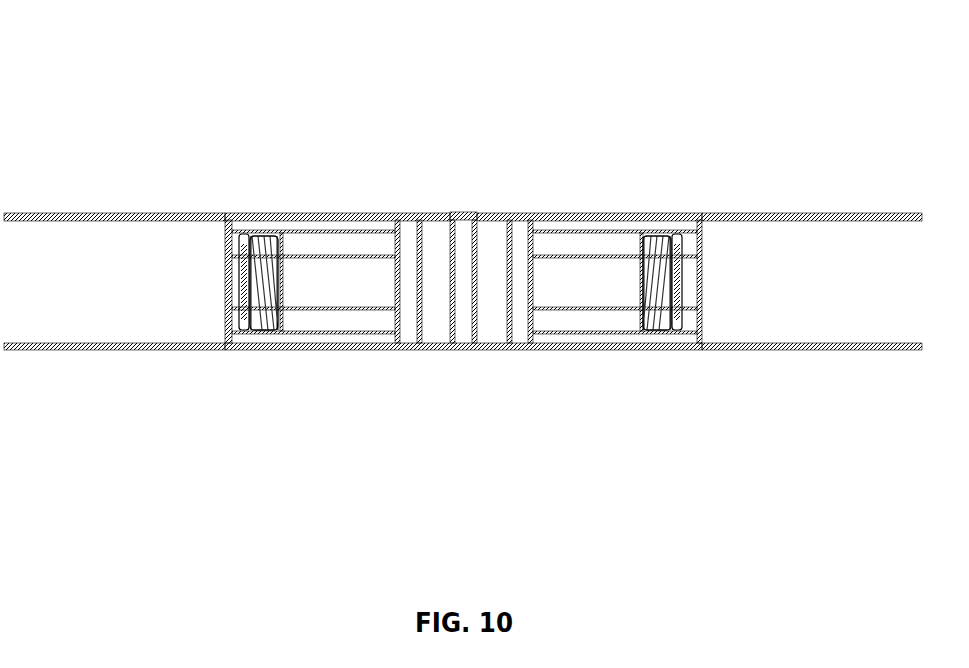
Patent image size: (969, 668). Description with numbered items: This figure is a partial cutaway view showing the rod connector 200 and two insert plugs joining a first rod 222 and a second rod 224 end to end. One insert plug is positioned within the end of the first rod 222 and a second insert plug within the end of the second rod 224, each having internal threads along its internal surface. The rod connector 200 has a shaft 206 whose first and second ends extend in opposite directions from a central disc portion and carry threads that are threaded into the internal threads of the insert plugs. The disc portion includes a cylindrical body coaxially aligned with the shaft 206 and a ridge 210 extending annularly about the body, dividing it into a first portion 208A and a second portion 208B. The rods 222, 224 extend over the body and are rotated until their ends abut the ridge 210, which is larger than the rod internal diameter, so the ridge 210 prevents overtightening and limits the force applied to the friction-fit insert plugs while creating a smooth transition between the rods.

The rod connector 200 is at (438, 236).
The shaft 206 is at (363, 268).
The first portion 208A is at (432, 335).
The second portion 208B is at (494, 335).
The ridge 210 is at (467, 337).
The first rod 222 is at (78, 334).
The second rod 224 is at (842, 352).